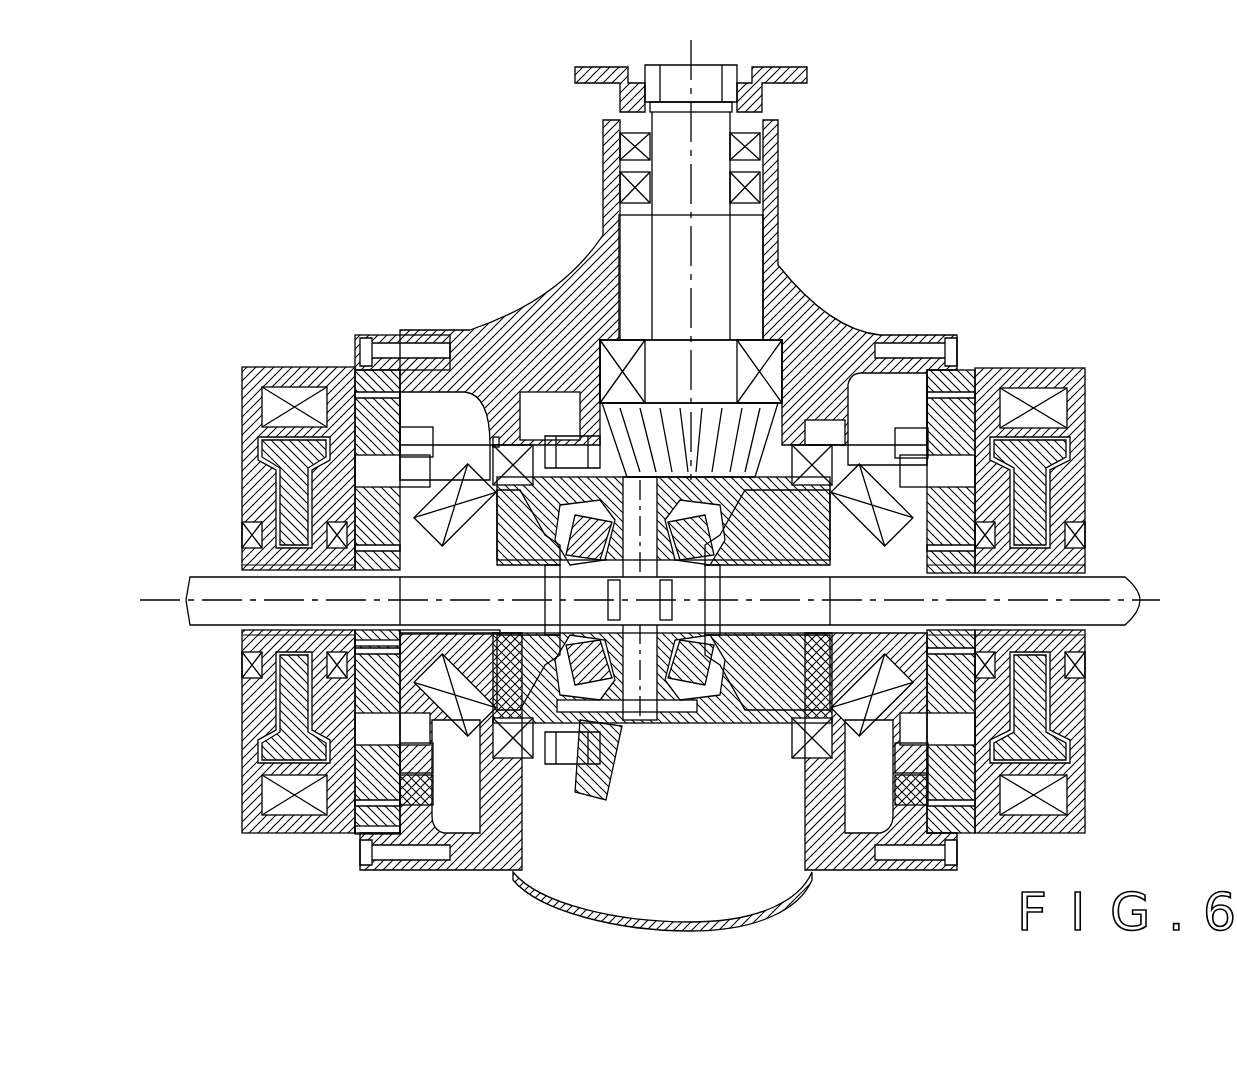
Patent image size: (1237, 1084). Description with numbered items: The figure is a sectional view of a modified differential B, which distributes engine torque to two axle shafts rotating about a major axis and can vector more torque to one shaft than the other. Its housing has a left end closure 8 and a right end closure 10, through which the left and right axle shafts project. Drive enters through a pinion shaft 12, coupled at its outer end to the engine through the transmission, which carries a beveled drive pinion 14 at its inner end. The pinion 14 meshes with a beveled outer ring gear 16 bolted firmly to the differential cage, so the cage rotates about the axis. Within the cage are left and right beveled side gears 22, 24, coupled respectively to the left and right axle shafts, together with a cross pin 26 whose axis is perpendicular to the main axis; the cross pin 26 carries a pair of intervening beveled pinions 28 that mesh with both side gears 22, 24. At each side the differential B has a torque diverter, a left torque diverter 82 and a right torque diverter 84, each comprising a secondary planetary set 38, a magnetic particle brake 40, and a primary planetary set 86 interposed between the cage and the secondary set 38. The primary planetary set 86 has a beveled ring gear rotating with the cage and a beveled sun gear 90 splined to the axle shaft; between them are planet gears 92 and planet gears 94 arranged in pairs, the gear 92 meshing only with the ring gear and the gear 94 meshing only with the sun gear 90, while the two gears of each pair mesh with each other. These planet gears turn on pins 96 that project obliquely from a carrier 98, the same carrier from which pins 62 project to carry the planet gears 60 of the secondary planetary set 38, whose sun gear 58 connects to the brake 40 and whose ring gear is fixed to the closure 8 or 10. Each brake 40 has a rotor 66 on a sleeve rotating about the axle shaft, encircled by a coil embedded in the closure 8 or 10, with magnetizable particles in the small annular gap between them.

The modified differential B is at (905, 256).
The left end closure 8 is at (242, 455).
The right end closure 10 is at (1100, 503).
The pinion shaft 12 is at (715, 246).
The beveled drive pinion 14 is at (815, 420).
The beveled outer ring gear 16 is at (578, 448).
The left beveled side gear 22 is at (560, 586).
The right beveled side gear 24 is at (715, 586).
The cross pin 26 is at (648, 696).
The intervening beveled pinions 28 is at (680, 712).
The secondary planetary set 38 is at (409, 792).
The magnetic particle brake 40 is at (264, 406).
The sun gear 58 is at (372, 572).
The planet gears 60 is at (370, 688).
The pins 62 is at (360, 848).
The rotor 66 is at (300, 506).
The left torque diverter 82 is at (342, 332).
The right torque diverter 84 is at (982, 357).
The primary planetary set 86 is at (511, 656).
The beveled sun gear 90 is at (440, 640).
The planet gear 92 is at (518, 865).
The planet gear 94 is at (480, 468).
The pins 96 is at (455, 478).
The carrier 98 is at (412, 420).